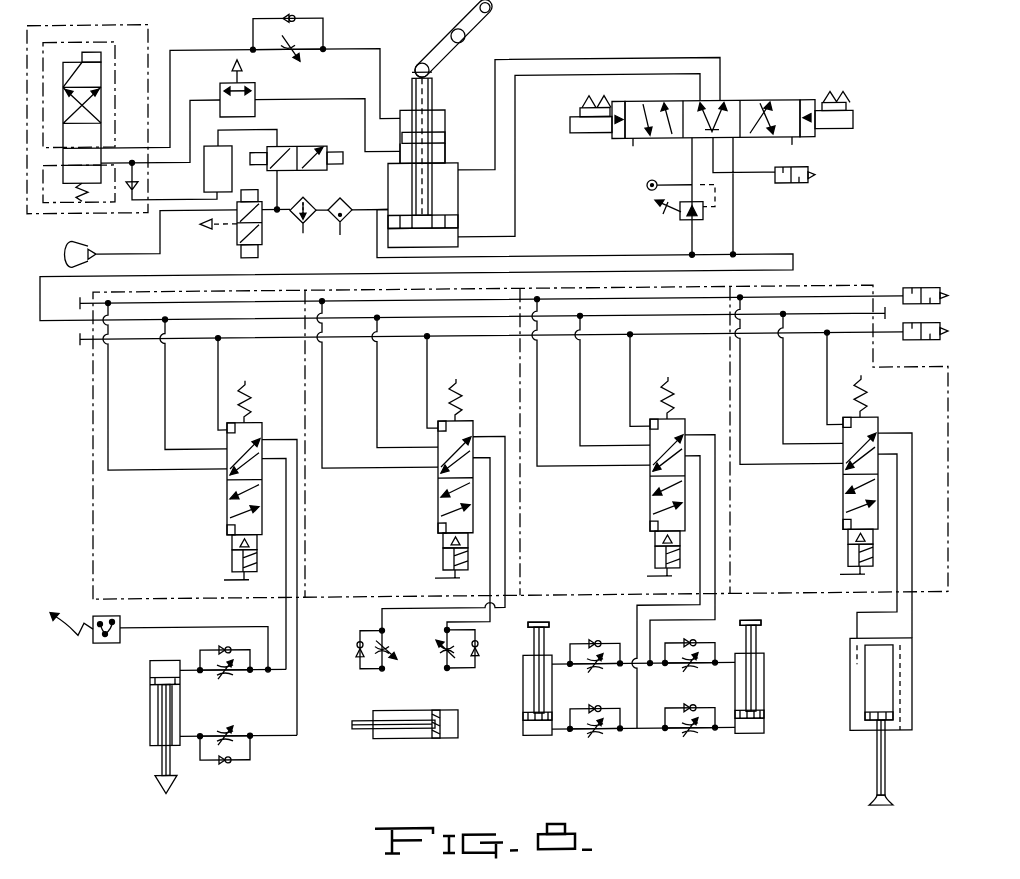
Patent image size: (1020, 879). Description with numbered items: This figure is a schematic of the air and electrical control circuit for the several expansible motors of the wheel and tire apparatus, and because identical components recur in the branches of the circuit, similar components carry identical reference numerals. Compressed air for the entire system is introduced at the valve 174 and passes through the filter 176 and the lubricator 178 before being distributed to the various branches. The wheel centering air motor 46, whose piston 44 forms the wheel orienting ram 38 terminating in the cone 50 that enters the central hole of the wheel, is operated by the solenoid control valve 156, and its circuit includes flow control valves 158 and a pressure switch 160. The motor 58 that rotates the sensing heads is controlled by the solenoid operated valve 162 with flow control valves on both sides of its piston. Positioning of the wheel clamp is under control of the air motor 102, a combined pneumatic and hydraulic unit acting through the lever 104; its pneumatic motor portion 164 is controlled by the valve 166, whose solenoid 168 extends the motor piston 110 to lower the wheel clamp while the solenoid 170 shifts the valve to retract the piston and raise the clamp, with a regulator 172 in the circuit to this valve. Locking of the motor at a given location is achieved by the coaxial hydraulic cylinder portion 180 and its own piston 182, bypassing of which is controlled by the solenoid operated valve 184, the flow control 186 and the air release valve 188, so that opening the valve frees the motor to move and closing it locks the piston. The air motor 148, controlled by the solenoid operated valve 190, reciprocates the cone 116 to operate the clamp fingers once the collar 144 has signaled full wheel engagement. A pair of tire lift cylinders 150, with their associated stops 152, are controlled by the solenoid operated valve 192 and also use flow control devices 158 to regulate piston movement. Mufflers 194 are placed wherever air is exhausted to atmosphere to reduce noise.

The wheel orienting ram 38 is at (162, 761).
The piston 44 is at (150, 690).
The air motor 46 is at (150, 708).
The cone 50 is at (170, 786).
The motor 58 is at (428, 743).
The air motor 102 is at (468, 194).
The lever 104 is at (490, 24).
The motor piston 110 is at (412, 85).
The cone 116 is at (869, 807).
The microswitch operating collar 144 is at (877, 767).
The air motor 148 is at (865, 700).
The tire lift cylinders 150 is at (540, 741).
The stop plates 152 is at (550, 633).
The solenoid control valve 156 is at (227, 507).
The flow control valves 158 is at (235, 733).
The pressure switch 160 is at (100, 645).
The solenoid operated valve 162 is at (438, 506).
The pneumatic motor portion 164 is at (479, 222).
The valve 166 is at (668, 145).
The valve solenoid 168 is at (592, 140).
The solenoid 170 is at (838, 136).
The regulator 172 is at (680, 226).
The valve 174 is at (237, 246).
The filter 176 is at (309, 200).
The lubricator 178 is at (342, 226).
The cylinder portion 180 is at (487, 137).
The piston 182 is at (436, 115).
The solenoid operated valve 184 is at (110, 90).
The flow control 186 is at (327, 24).
The air release valve 188 is at (258, 96).
The solenoid operated valve 190 is at (843, 503).
The solenoid operated valve 192 is at (650, 506).
The mufflers 194 is at (806, 191).